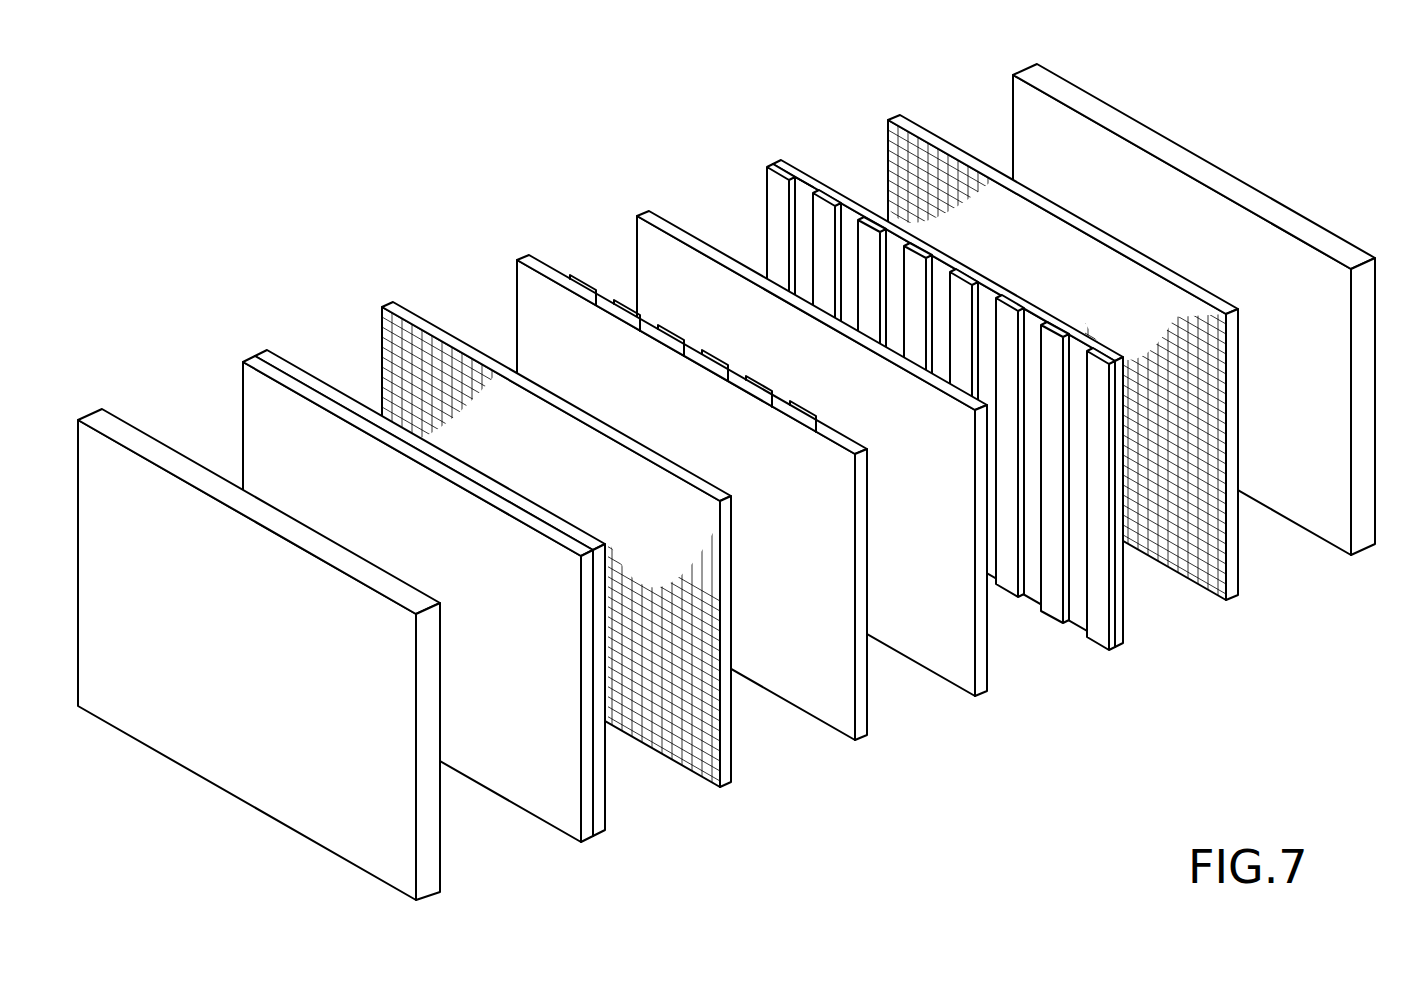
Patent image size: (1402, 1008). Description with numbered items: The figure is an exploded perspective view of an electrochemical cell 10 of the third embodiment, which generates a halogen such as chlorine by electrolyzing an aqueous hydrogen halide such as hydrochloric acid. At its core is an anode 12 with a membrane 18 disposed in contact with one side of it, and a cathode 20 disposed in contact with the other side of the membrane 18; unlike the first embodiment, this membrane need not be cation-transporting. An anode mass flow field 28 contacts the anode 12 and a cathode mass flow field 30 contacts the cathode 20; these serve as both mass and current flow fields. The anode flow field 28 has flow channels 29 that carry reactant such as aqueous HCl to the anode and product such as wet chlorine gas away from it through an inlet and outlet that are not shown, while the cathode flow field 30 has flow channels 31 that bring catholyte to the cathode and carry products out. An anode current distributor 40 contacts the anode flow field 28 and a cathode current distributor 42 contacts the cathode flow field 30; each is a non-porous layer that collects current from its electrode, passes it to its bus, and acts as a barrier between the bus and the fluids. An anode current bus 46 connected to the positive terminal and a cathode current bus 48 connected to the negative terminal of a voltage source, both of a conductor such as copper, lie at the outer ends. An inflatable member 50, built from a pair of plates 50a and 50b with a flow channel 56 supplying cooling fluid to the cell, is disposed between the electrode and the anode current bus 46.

The electrochemical cell 10 is at (726, 482).
The anode 12 is at (770, 439).
The membrane 18 is at (638, 214).
The cathode 20 is at (1004, 404).
The anode mass flow field 28 is at (647, 461).
The flow channels 29 is at (565, 270).
The cathode mass flow field 30 is at (1117, 603).
The flow channels 31 is at (800, 188).
The anode current distributor 40 is at (385, 305).
The cathode current distributor 42 is at (1240, 568).
The anode current bus 46 is at (247, 808).
The cathode current bus 48 is at (1213, 176).
The inflatable member 50 is at (378, 577).
The plate 50a is at (259, 372).
The plate 50b is at (276, 353).
The flow channel 56 is at (421, 582).